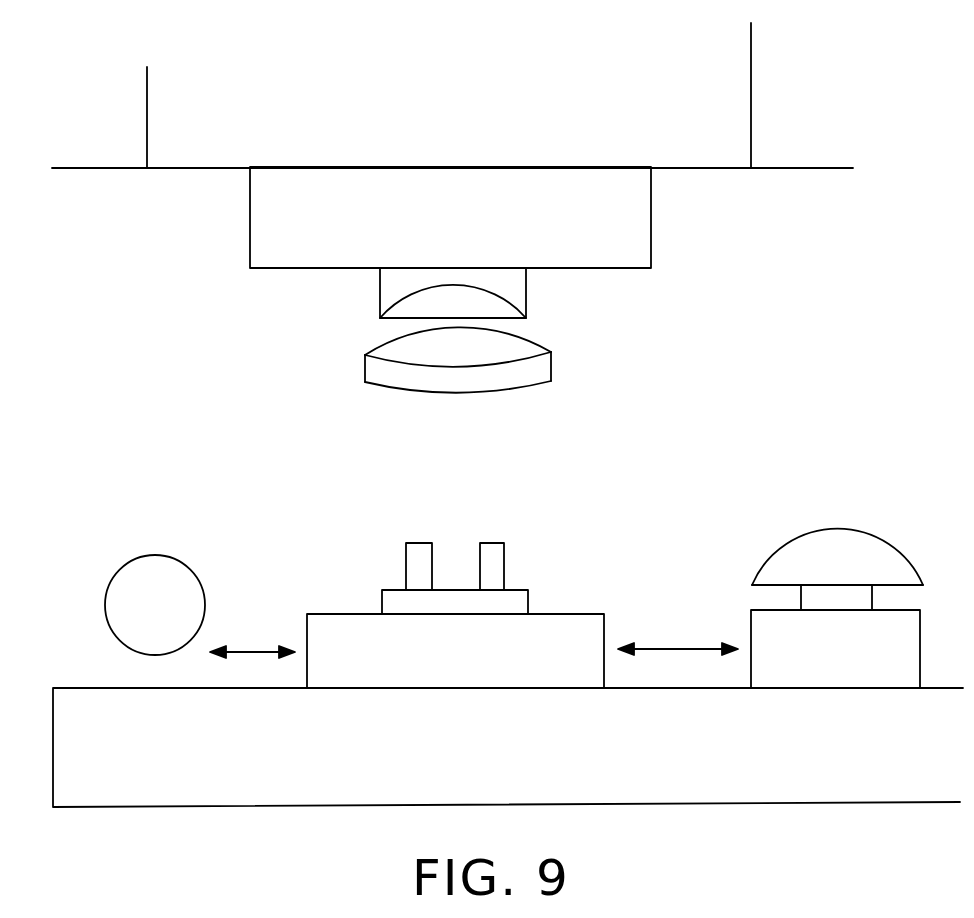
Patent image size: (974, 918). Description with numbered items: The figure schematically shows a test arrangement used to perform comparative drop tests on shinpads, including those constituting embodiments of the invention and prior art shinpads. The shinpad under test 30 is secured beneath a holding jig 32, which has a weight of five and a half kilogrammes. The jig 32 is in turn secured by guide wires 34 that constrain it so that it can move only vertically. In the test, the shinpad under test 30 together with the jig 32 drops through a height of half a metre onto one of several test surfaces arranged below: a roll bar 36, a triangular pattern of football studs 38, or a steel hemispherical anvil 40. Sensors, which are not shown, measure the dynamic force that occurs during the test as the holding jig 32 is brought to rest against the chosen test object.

The shinpad under test 30 is at (540, 375).
The holding jig 32 is at (630, 235).
The guide wires 34 is at (751, 103).
The roll bar 36 is at (162, 572).
The triangular pattern of football studs 38 is at (504, 543).
The steel hemispherical anvil 40 is at (832, 543).